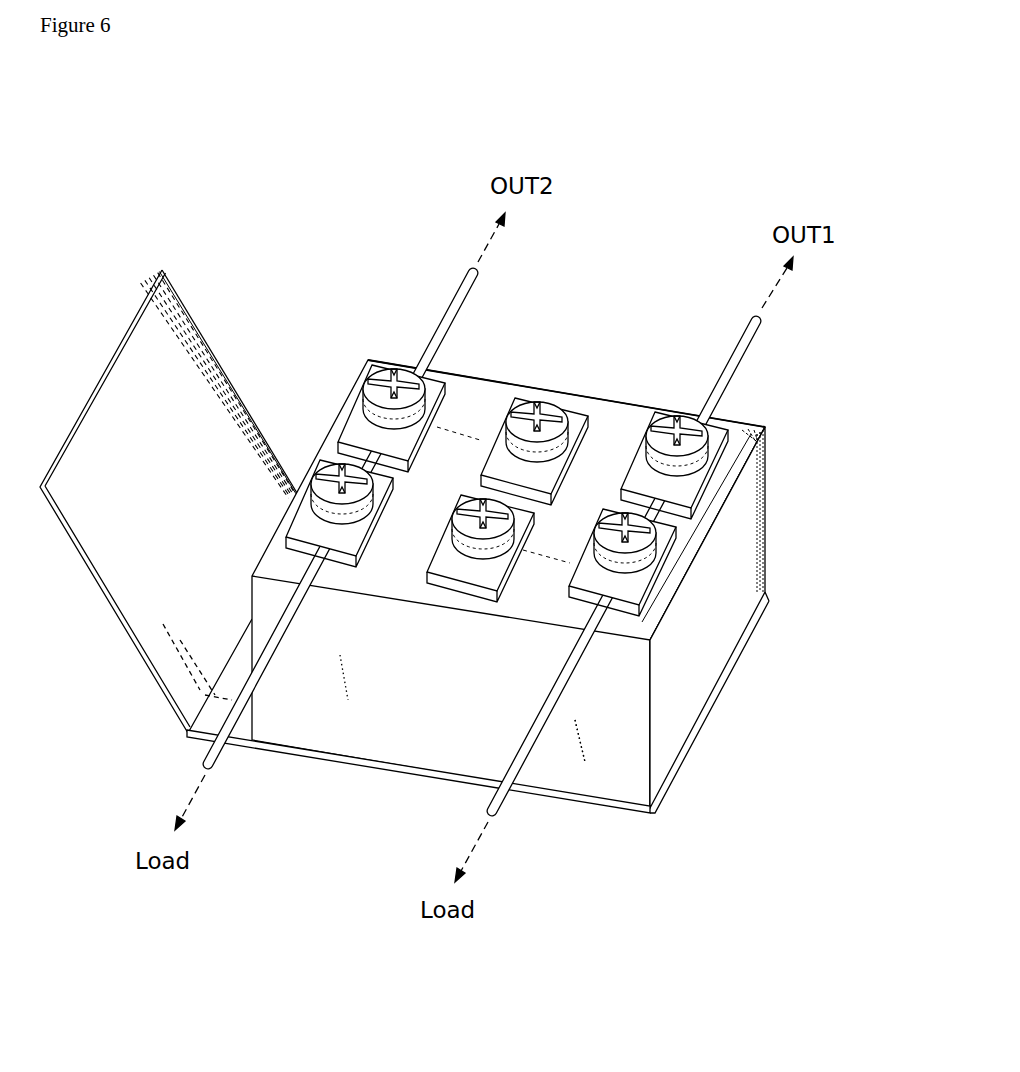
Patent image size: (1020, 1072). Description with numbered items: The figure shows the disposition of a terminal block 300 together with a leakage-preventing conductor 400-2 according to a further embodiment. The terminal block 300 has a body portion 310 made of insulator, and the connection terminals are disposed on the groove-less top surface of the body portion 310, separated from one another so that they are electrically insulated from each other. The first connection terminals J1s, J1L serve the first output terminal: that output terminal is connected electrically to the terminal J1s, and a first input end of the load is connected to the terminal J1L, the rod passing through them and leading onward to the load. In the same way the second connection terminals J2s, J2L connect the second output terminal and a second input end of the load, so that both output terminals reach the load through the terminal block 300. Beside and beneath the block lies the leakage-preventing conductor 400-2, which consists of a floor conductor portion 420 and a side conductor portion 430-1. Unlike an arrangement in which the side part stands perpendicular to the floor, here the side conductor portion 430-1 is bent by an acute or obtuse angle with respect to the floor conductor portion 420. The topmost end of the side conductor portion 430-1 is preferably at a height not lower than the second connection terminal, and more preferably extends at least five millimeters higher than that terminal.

The terminal block 300 is at (783, 491).
The body portion 310 is at (673, 697).
The leakage-preventing conductor 400-2 is at (147, 673).
The floor conductor portion 420 is at (354, 764).
The side conductor portion 430-1 is at (190, 316).
The second connection terminal J2s is at (387, 370).
The second connection terminal J2L is at (333, 465).
The first connection terminal J1s is at (670, 416).
The first connection terminal J1L is at (632, 535).